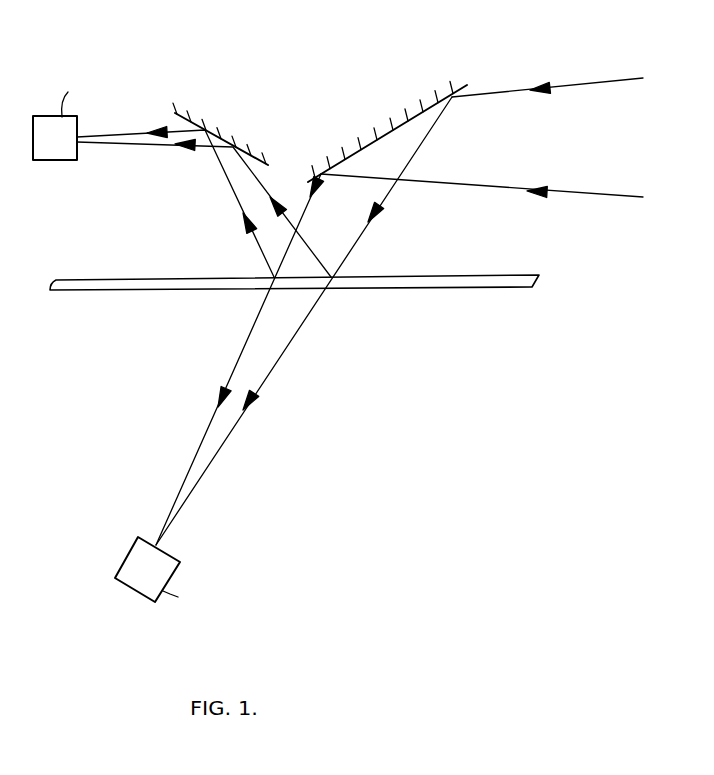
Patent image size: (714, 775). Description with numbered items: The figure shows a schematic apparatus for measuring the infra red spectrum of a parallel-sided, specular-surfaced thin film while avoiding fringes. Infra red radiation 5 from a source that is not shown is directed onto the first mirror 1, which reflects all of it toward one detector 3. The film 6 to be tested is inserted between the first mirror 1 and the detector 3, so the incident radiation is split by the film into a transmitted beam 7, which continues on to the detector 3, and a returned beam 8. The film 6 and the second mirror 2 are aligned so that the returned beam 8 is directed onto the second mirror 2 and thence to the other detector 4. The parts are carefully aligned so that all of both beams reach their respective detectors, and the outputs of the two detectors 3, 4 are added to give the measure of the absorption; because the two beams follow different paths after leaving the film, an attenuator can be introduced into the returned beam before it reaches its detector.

The first mirror 1 is at (383, 113).
The second mirror 2 is at (222, 125).
The detector 3 is at (163, 576).
The detector 4 is at (50, 124).
The infra red radiation 5 is at (553, 189).
The film 6 is at (507, 280).
The transmitted beam 7 is at (262, 386).
The returned beam 8 is at (218, 172).